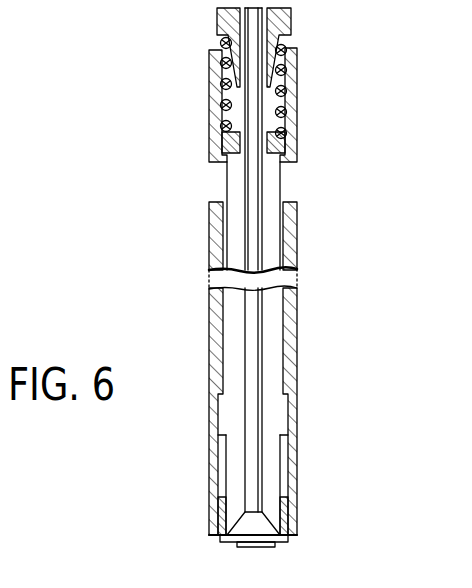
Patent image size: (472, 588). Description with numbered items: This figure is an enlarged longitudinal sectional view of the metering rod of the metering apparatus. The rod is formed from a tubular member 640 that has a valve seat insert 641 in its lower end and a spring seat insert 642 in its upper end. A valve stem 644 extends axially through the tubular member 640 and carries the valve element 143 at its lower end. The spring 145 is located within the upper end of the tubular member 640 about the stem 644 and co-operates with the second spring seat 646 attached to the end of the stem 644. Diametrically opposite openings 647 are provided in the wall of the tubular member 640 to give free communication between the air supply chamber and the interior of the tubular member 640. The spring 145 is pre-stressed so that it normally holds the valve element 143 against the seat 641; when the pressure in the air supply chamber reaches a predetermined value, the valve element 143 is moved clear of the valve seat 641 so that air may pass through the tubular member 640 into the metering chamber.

The second spring seat 646 is at (276, 23).
The spring 145 is at (285, 90).
The spring seat insert 642 is at (286, 148).
The openings 647 is at (281, 183).
The tubular member 640 is at (298, 250).
The valve stem 644 is at (254, 333).
The valve seat insert 641 is at (286, 515).
The valve element 143 is at (261, 533).